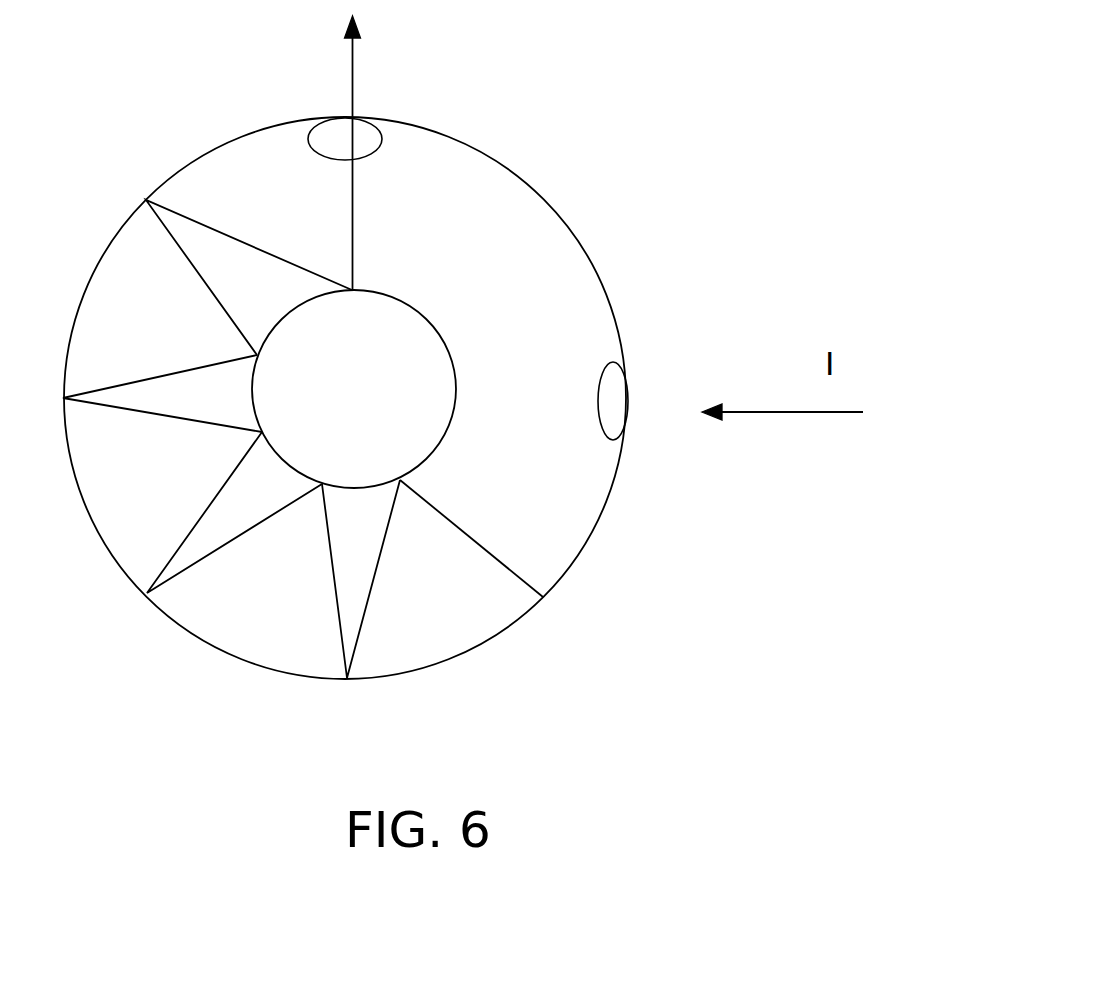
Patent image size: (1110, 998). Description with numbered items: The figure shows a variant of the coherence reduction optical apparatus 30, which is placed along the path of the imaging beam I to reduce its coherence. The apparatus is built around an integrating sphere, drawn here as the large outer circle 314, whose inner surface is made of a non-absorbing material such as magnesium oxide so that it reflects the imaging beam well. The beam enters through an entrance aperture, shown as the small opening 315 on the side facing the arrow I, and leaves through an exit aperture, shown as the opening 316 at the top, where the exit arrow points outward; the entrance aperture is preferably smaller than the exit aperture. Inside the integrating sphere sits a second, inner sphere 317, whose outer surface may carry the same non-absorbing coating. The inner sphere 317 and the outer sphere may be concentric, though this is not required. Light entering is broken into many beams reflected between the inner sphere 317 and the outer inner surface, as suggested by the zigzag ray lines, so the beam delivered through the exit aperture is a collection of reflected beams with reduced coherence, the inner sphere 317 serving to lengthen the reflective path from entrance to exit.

The coherence reduction optical apparatus 30 is at (407, 347).
The spherical housing 314 is at (497, 158).
The inlet opening 315 is at (627, 420).
The outlet opening 316 is at (347, 117).
The inner sphere 317 is at (452, 423).